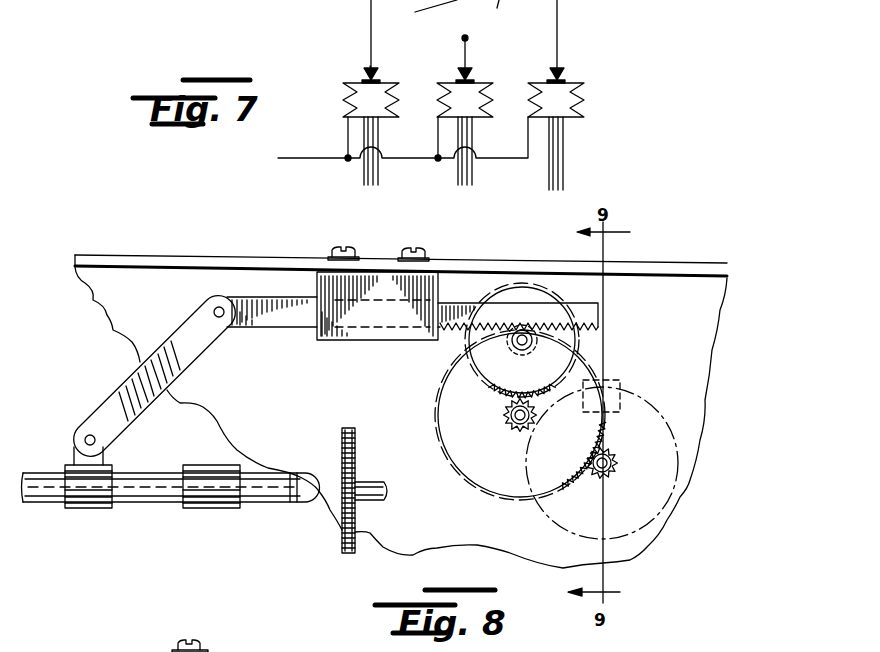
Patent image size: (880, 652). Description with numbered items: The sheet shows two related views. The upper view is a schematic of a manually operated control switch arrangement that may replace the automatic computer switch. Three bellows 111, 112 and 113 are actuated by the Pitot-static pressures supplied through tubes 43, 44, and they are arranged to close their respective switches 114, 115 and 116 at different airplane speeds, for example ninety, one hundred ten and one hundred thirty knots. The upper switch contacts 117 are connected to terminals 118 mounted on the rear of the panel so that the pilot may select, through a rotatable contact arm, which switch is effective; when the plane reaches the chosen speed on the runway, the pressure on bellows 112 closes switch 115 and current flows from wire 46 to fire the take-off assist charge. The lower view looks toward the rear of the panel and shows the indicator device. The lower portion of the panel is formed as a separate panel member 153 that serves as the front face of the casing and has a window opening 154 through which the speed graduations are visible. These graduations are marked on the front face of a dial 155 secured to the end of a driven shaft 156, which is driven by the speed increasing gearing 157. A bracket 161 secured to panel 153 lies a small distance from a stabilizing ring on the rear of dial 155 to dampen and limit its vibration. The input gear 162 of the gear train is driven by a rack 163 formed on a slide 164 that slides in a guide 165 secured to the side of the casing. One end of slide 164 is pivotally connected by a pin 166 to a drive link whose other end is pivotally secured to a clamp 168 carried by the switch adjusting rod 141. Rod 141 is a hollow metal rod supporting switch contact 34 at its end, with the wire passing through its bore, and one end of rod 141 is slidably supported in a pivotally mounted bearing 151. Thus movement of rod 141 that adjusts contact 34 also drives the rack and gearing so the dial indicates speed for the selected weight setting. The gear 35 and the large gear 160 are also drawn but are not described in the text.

In FIG. 8, the switch contact 34 is at (300, 505).
In FIG. 8, the gear 35 is at (342, 535).
In FIG. 7, the Pitot-static pressure tube 43 is at (363, 180).
In FIG. 7, the Pitot-static pressure tube 44 is at (379, 170).
In FIG. 7, the wire 46 is at (305, 165).
In FIG. 7, the bellows 111 is at (346, 105).
In FIG. 7, the bellows 112 is at (441, 105).
In FIG. 7, the bellows 113 is at (533, 106).
In FIG. 7, the switch 114 is at (366, 73).
In FIG. 7, the switch 115 is at (460, 73).
In FIG. 7, the switch 116 is at (551, 74).
In FIG. 7, the upper switch contact 117 is at (376, 66).
In FIG. 7, the terminal 118 is at (465, 38).
In FIG. 8, the hollow metal rod 141 is at (148, 503).
In FIG. 8, the pivotally mounted bearing 151 is at (210, 510).
In FIG. 8, the panel member 153 is at (708, 366).
In FIG. 8, the window opening 154 is at (613, 380).
In FIG. 8, the dial 155 is at (580, 536).
In FIG. 8, the driven shaft 156 is at (617, 478).
In FIG. 8, the speed increasing gearing 157 is at (498, 406).
In FIG. 8, the gear 160 is at (492, 494).
In FIG. 8, the bracket 161 is at (182, 341).
In FIG. 8, the input gear 162 is at (514, 347).
In FIG. 8, the rack 163 is at (455, 330).
In FIG. 8, the slide 164 is at (312, 320).
In FIG. 8, the guide 165 is at (369, 285).
In FIG. 8, the pin 166 is at (216, 303).
In FIG. 8, the clamp 168 is at (85, 510).